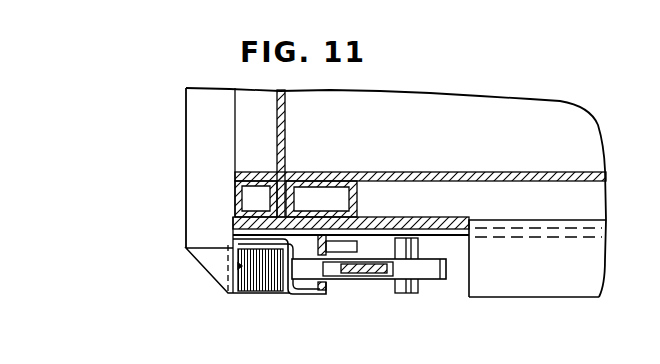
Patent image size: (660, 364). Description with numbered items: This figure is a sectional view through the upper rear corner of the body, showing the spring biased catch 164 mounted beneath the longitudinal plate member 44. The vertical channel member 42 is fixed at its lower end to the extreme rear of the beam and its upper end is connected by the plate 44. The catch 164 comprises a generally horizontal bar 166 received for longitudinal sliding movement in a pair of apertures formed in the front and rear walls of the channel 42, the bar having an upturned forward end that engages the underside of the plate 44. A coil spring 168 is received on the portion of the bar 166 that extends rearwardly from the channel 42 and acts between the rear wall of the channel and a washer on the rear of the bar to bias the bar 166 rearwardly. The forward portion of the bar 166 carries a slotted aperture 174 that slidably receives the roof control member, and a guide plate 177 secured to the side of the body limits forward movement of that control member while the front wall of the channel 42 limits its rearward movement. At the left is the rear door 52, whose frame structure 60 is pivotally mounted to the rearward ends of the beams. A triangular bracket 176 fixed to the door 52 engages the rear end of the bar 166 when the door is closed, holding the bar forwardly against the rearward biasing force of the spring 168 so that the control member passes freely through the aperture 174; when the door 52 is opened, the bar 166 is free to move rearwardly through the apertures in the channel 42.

The rear door 52 is at (184, 165).
The frame structure 60 is at (190, 203).
The triangular bracket 176 is at (210, 264).
The coil spring 168 is at (259, 287).
The vertical channel member 42 is at (293, 295).
The spring biased catch 164 is at (348, 306).
The slotted aperture 174 is at (325, 267).
The guide plate 177 is at (419, 287).
The horizontal bar 166 is at (448, 266).
The longitudinal plate member 44 is at (567, 285).